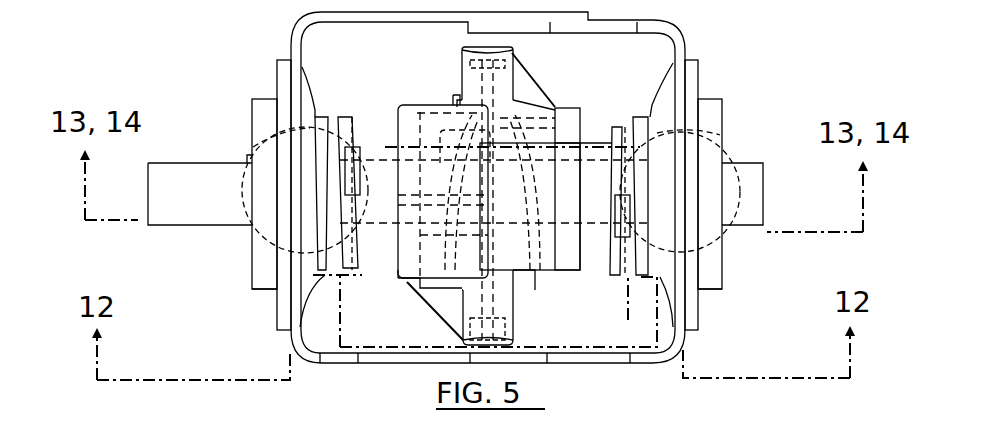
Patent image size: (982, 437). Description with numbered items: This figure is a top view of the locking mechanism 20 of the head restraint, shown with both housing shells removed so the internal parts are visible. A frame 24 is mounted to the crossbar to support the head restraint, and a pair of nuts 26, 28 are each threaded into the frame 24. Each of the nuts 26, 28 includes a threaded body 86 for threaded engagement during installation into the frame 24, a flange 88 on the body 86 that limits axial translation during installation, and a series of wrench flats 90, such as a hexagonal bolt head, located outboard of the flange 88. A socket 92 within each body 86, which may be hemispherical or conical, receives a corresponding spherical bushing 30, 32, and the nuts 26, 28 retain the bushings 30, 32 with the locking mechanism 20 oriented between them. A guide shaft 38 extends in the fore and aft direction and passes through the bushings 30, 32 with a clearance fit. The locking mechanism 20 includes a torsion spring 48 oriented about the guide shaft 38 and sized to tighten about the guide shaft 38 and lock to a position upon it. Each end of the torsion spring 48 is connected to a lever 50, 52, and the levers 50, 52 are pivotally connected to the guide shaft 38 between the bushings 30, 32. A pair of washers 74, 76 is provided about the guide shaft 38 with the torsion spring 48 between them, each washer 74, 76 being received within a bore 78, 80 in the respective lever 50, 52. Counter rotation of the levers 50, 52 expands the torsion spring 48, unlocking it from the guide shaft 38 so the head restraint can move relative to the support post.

The locking mechanism 20 is at (760, 90).
The frame 24 is at (292, 25).
The nut 26 is at (250, 123).
The nut 28 is at (698, 65).
The bushing 30 is at (253, 147).
The bushing 32 is at (720, 135).
The guide shaft 38 is at (173, 225).
The torsion spring 48 is at (403, 282).
The lever 50 is at (443, 307).
The lever 52 is at (522, 80).
The washer 74 is at (397, 140).
The washer 76 is at (585, 133).
The bore 78 is at (433, 127).
The bore 80 is at (512, 272).
The threaded body 86 is at (322, 117).
The flange 88 is at (277, 60).
The wrench flats 90 is at (257, 289).
The socket 92 is at (240, 225).